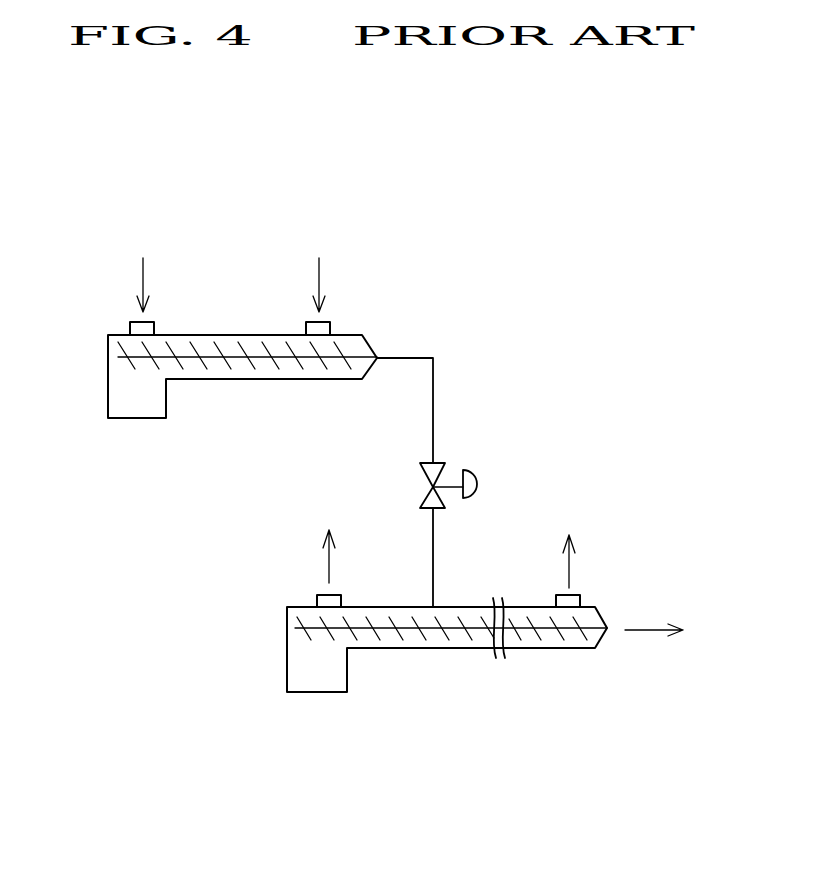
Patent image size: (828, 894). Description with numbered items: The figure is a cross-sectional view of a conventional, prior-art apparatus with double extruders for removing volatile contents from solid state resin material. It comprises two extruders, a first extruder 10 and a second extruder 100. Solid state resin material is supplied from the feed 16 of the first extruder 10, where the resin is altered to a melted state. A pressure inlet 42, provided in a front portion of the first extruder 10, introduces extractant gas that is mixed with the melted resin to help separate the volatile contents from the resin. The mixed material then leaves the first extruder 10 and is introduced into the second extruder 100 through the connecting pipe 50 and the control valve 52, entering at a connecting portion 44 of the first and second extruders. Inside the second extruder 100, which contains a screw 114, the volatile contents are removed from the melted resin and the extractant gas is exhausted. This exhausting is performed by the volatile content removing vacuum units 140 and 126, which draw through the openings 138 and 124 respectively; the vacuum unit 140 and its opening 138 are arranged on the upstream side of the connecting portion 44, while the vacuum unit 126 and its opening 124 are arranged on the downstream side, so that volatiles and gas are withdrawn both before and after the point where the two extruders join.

The first extruder 10 is at (358, 257).
The feed 16 is at (154, 328).
The pressure inlet 42 is at (330, 330).
The connecting pipe 50 is at (434, 392).
The control valve 52 is at (466, 470).
The connecting portion 44 is at (437, 605).
The second extruder 100 is at (543, 663).
The screw 114 is at (408, 631).
The opening 138 is at (315, 602).
The volatile content removing vacuum unit 140 is at (325, 565).
The volatile content removing vacuum unit 126 is at (575, 565).
The opening 124 is at (575, 601).